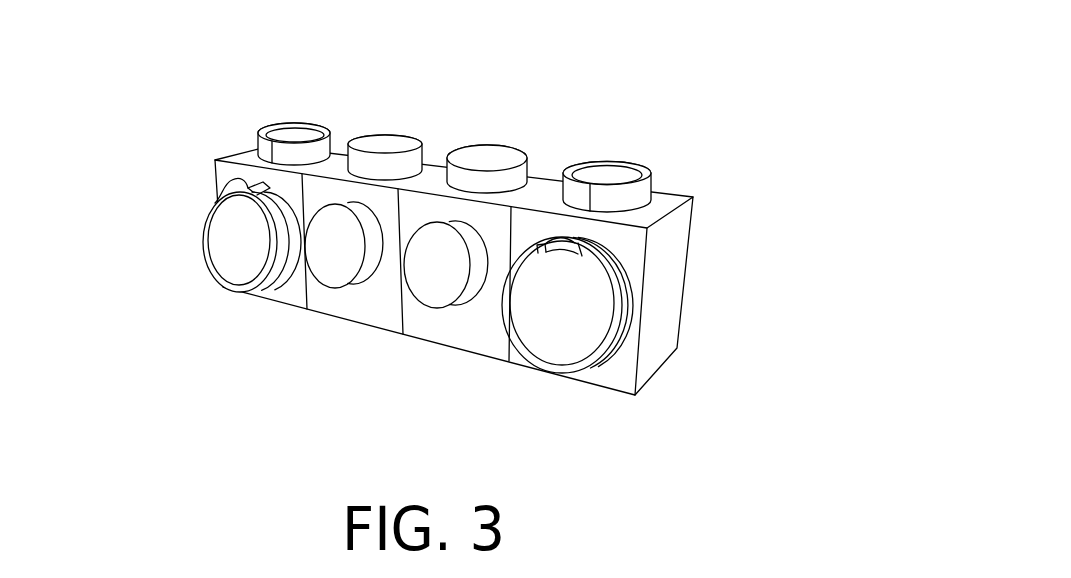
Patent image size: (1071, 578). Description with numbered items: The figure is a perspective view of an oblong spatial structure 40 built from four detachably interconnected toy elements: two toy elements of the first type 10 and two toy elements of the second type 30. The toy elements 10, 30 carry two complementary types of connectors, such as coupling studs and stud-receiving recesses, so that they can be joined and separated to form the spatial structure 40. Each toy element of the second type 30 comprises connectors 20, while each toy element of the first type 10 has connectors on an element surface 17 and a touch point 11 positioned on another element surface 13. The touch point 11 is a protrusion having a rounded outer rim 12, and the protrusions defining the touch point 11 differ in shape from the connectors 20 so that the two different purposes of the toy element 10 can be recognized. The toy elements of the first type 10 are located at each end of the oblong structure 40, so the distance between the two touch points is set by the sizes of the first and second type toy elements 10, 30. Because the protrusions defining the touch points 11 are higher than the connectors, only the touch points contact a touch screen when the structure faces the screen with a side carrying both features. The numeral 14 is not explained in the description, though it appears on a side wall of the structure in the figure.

The toy element of the first type 10 is at (168, 365).
The touch point 11 is at (245, 262).
The rounded outer rim 12 is at (600, 273).
The element surface 13 is at (275, 288).
The side wall 14 is at (667, 322).
The element surface 17 is at (245, 152).
The connector 20 is at (287, 134).
The toy element of the second type 30 is at (330, 356).
The spatial structure 40 is at (687, 95).